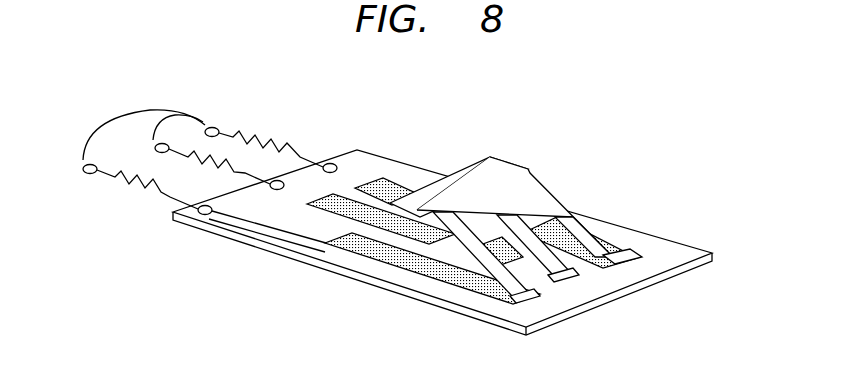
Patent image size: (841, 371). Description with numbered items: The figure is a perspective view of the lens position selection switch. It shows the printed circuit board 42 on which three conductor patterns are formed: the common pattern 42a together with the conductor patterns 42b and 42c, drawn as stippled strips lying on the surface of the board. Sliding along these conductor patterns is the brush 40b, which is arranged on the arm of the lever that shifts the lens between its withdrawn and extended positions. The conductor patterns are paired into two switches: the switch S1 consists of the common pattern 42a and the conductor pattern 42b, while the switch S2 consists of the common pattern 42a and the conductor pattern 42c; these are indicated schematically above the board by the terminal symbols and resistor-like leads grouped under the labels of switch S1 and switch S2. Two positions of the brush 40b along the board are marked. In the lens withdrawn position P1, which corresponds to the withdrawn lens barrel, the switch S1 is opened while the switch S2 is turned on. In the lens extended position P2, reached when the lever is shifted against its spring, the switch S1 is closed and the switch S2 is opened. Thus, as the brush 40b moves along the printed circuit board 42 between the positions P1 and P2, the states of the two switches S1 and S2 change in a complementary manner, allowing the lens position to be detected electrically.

The printed circuit board 42 is at (670, 242).
The conductor pattern (common pattern) 42a is at (403, 182).
The conductor pattern 42b is at (343, 198).
The conductor pattern 42c is at (363, 257).
The brush 40b is at (538, 185).
The lens withdrawn position P1 is at (487, 298).
The lens extended position P2 is at (320, 217).
The switch S1 is at (172, 115).
The switch S2 is at (110, 112).